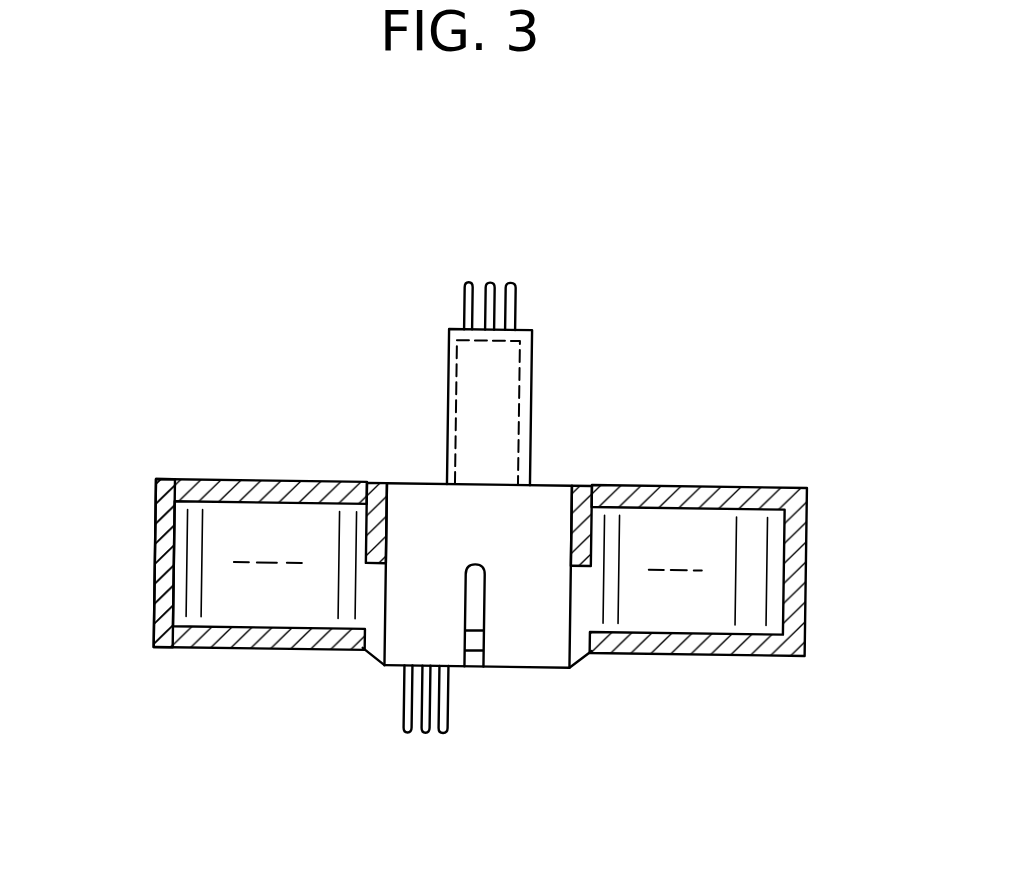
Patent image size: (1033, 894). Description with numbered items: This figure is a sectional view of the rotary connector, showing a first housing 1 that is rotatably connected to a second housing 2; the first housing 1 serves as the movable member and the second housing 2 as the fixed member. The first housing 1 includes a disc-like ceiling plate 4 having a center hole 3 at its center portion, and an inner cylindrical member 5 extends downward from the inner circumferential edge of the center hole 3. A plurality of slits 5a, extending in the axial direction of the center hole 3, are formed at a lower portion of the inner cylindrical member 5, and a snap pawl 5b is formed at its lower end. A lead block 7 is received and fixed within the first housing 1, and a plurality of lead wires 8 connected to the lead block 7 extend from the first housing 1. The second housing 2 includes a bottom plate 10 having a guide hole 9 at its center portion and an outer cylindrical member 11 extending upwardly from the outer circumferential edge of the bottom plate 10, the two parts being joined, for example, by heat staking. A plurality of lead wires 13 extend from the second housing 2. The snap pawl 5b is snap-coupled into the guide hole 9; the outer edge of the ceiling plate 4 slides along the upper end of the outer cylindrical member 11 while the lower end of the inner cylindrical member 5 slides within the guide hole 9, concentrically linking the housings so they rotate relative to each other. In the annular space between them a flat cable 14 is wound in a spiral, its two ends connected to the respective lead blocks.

The first housing 1 is at (761, 398).
The second housing 2 is at (89, 546).
The center hole 3 is at (417, 509).
The ceiling plate 4 is at (732, 482).
The inner cylindrical member 5 is at (584, 537).
The slits 5a is at (485, 599).
The snap pawl 5b is at (583, 650).
The lead block 7 is at (448, 356).
The lead wires 8 is at (462, 284).
The guide hole 9 is at (371, 644).
The bottom plate 10 is at (194, 643).
The outer cylindrical member 11 is at (161, 563).
The lead wires 13 is at (411, 709).
The flat cable 14 is at (771, 578).